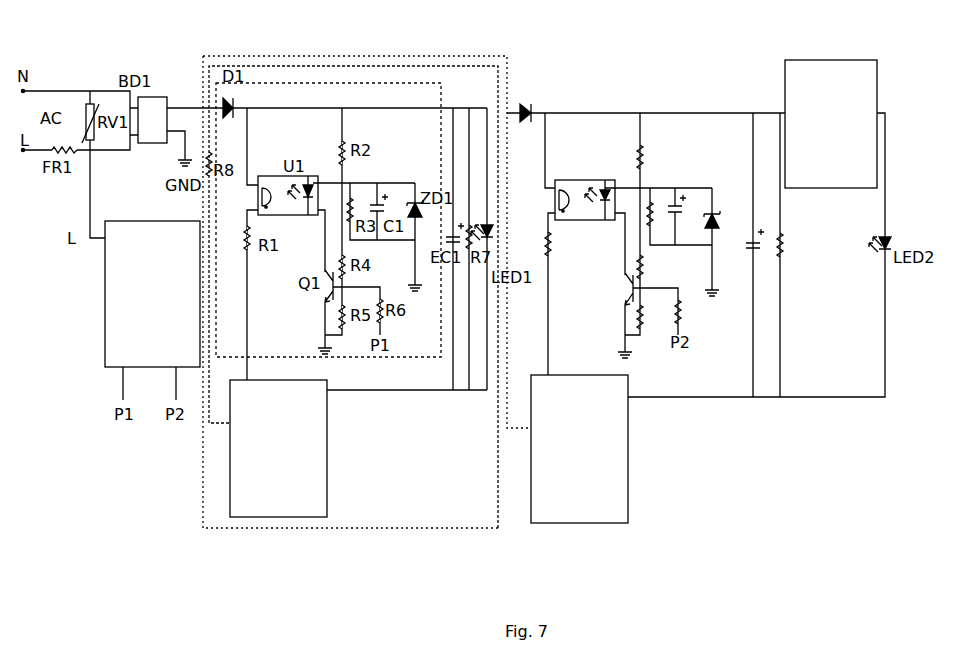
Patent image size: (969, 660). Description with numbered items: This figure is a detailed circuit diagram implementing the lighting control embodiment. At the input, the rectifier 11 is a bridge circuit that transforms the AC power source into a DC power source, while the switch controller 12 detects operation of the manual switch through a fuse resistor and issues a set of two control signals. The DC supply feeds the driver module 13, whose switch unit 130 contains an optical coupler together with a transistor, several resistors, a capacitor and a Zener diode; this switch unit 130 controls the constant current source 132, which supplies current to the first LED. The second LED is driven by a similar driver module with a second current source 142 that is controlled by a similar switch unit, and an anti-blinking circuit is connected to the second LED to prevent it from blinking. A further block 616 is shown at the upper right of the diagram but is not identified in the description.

The rectifier 11 is at (152, 97).
The switch controller 12 is at (123, 221).
The driver module 13 is at (405, 56).
The switch unit 130 is at (441, 96).
The constant current source 132 is at (328, 435).
The second current source 142 is at (627, 468).
The driver unit 616 is at (825, 67).